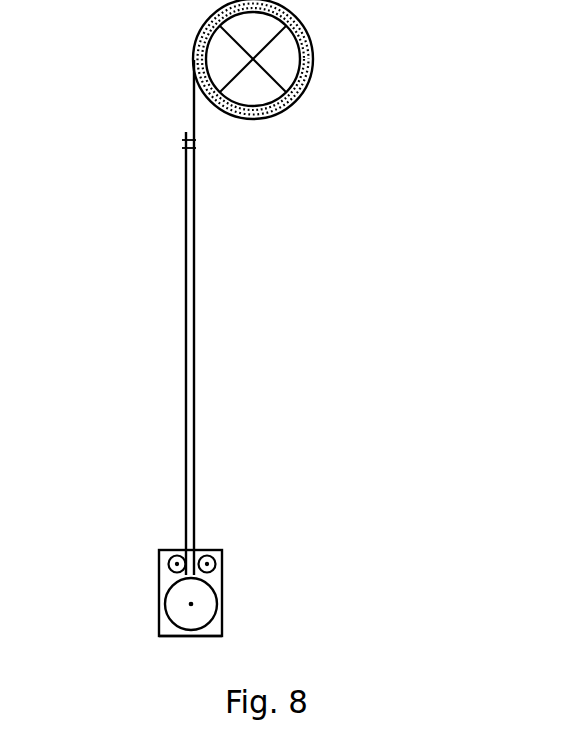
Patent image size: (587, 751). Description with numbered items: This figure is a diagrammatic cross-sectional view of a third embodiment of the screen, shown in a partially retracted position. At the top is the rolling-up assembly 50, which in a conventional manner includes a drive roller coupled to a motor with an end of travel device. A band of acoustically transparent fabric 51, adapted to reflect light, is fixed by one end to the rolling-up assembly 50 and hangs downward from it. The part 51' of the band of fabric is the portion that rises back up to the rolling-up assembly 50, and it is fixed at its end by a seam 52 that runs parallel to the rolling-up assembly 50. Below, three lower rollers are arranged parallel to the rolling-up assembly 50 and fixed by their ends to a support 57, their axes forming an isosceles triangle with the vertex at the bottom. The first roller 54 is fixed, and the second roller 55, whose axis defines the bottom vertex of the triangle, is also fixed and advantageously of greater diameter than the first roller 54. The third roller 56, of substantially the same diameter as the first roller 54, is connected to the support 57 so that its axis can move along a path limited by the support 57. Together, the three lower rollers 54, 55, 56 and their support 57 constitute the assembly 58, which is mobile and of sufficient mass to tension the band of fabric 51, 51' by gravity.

The rolling-up assembly 50 is at (313, 35).
The band of acoustically transparent fabric 51 is at (245, 317).
The part of the band of fabric 51' is at (130, 353).
The seam 52 is at (183, 148).
The first roller 54 is at (214, 557).
The second roller 55 is at (204, 611).
The third roller 56 is at (171, 558).
The support 57 is at (159, 626).
The assembly 58 is at (229, 589).